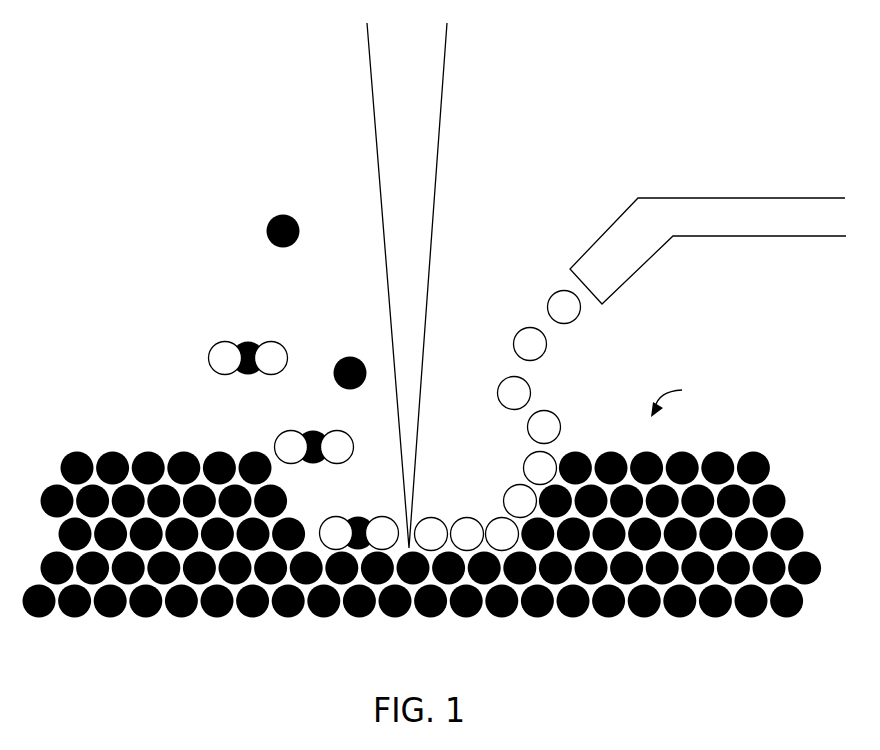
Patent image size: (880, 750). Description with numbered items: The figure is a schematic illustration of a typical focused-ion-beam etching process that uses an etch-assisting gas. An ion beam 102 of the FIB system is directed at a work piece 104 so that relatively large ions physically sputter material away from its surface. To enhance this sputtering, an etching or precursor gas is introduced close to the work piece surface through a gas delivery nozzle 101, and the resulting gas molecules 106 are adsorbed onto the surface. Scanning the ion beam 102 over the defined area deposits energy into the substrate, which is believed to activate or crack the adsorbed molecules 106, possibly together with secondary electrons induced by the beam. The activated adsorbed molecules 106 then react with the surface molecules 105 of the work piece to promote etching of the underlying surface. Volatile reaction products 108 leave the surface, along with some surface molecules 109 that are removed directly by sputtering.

The gas delivery nozzle 101 is at (653, 213).
The ion beam 102 is at (410, 155).
The work piece 104 is at (689, 395).
The surface molecules 105 is at (115, 452).
The gas molecules 106 is at (513, 490).
The volatile reaction products 108 is at (252, 342).
The surface molecules removed by sputtering 109 is at (287, 214).